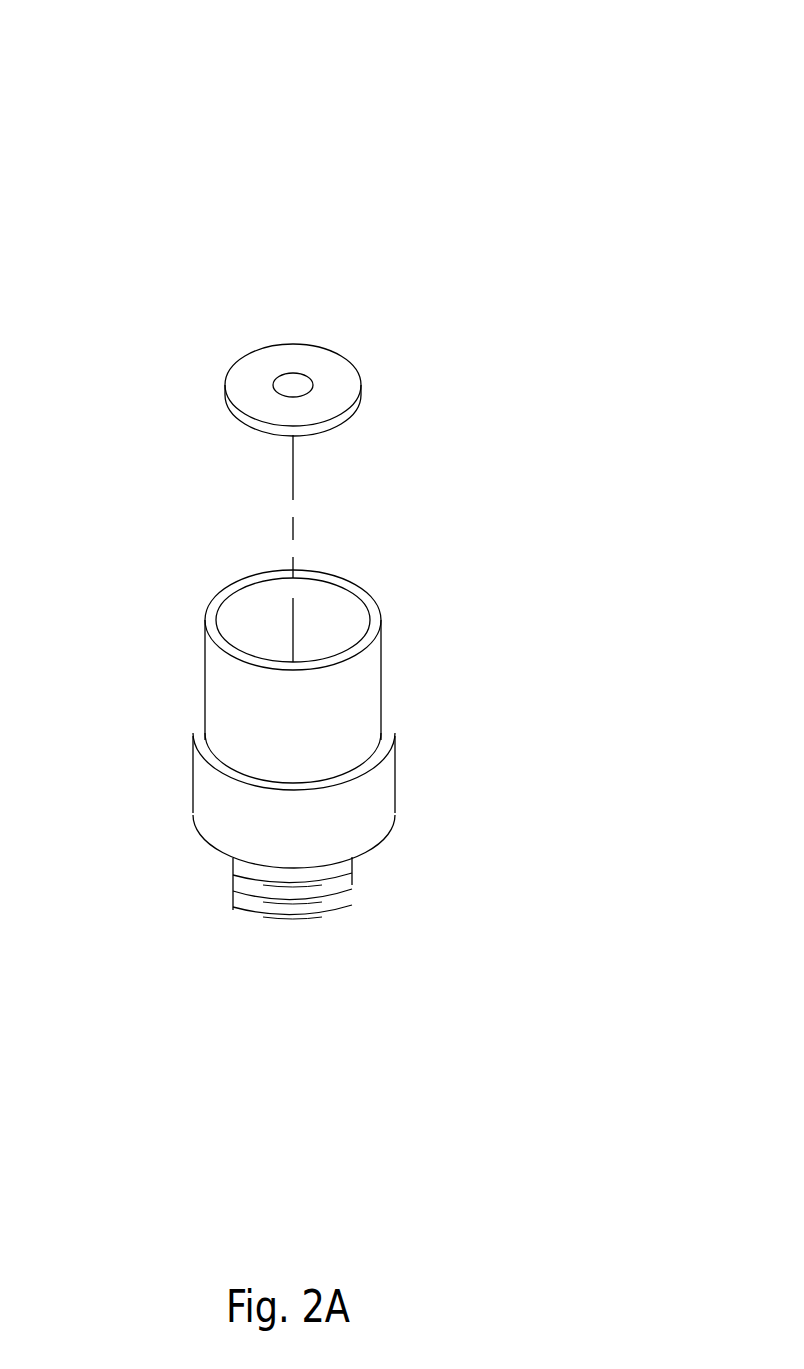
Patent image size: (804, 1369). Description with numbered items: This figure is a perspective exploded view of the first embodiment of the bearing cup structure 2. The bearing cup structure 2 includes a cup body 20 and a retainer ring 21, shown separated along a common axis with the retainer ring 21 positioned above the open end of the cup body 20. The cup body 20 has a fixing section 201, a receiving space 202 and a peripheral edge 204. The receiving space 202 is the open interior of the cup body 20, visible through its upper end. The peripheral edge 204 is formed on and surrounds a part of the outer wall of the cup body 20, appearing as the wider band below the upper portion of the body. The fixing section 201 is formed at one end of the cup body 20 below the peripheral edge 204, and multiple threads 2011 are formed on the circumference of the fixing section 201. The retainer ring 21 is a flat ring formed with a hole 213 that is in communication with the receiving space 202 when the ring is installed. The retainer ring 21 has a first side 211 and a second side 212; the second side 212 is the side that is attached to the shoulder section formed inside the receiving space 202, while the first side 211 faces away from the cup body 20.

The bearing cup structure 2 is at (614, 72).
The retainer ring 21 is at (445, 322).
The first side 211 is at (238, 383).
The second side 212 is at (243, 428).
The hole 213 is at (293, 387).
The cup body 20 is at (382, 673).
The receiving space 202 is at (320, 620).
The peripheral edge 204 is at (199, 738).
The fixing section 201 is at (357, 877).
The threads 2011 is at (252, 880).